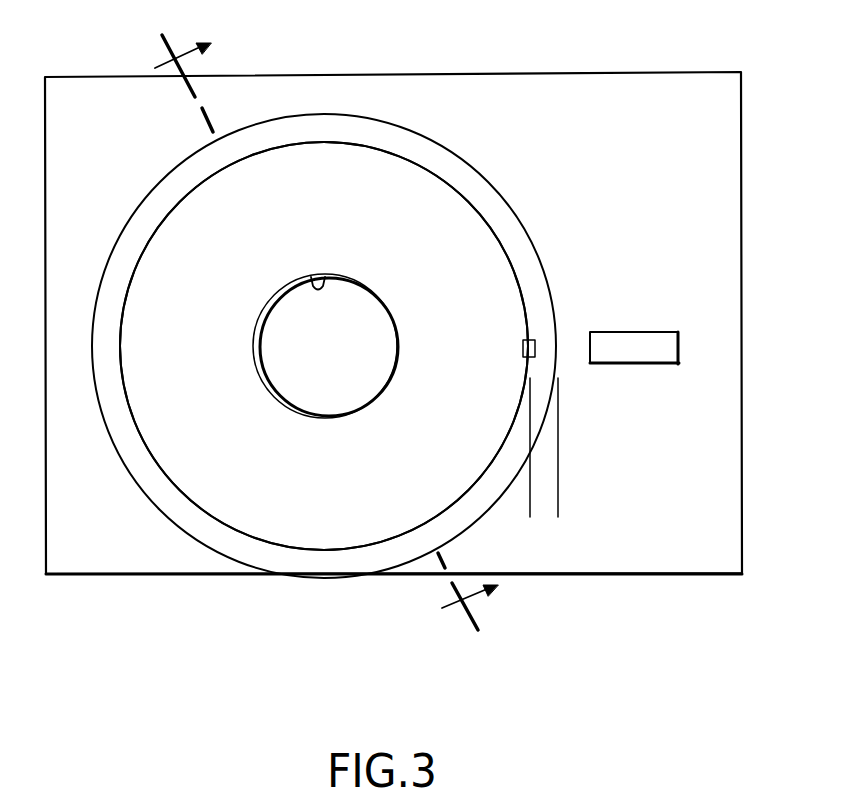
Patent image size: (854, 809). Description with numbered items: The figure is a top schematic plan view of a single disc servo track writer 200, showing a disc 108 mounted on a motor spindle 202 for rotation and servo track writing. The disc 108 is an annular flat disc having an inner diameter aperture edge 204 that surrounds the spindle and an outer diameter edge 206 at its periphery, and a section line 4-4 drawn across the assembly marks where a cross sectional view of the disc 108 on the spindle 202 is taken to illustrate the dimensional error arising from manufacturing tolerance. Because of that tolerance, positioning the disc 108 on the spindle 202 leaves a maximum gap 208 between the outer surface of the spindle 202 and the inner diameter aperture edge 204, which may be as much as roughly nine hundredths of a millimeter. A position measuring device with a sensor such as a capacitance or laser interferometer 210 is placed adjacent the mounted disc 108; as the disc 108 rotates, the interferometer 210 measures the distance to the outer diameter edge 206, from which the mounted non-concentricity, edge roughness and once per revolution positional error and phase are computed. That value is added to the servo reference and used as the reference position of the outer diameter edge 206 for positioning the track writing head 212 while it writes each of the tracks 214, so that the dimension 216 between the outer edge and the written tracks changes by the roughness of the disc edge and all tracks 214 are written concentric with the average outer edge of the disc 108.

The single disc servo track writer 200 is at (638, 73).
The outer diameter edge 206 is at (495, 192).
The disc 108 is at (398, 168).
The tracks 214 is at (515, 272).
The motor spindle 202 is at (368, 313).
The maximum gap 208 is at (290, 284).
The inner diameter aperture edge 204 is at (322, 285).
The track writing head 212 is at (540, 338).
The interferometer 210 is at (645, 330).
The dimension 216 is at (510, 497).
The section line 4- 4 is at (328, 329).